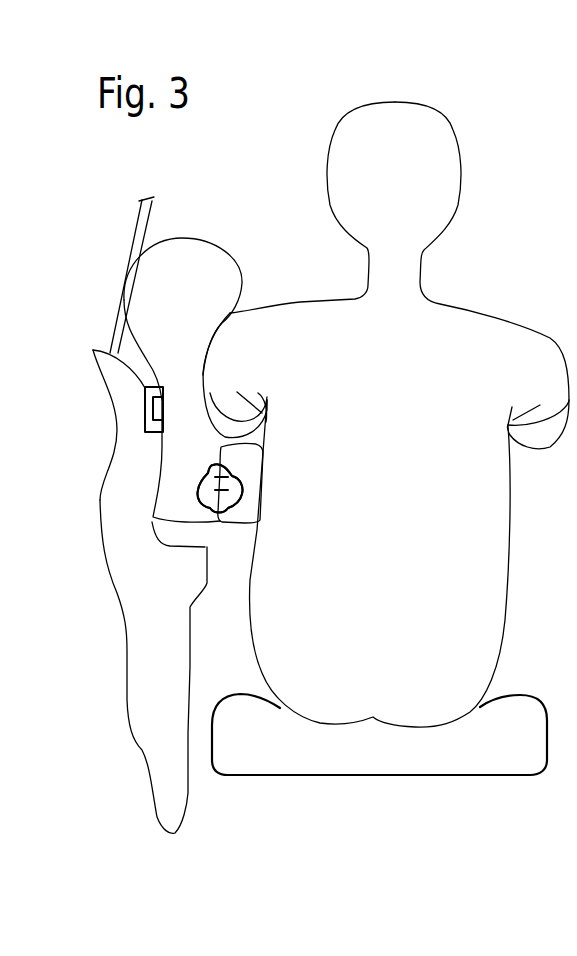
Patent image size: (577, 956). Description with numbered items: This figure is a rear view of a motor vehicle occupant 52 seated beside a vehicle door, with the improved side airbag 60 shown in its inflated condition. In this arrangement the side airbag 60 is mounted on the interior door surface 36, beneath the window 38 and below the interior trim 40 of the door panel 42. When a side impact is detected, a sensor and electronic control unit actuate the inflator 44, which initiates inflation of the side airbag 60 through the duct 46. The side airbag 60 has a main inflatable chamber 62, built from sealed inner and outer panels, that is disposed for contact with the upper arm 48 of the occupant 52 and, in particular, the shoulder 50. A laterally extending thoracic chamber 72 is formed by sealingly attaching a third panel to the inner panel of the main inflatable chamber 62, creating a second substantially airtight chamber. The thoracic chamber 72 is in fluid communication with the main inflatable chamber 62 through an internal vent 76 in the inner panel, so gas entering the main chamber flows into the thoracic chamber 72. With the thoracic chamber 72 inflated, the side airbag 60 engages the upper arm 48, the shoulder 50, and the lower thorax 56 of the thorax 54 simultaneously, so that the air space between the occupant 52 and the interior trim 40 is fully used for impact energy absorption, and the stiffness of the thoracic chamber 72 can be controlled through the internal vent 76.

The interior door surface 36 is at (190, 695).
The window 38 is at (138, 233).
The interior trim 40 is at (128, 360).
The door panel 42 is at (150, 527).
The inflator 44 is at (143, 427).
The duct 46 is at (145, 408).
The upper arm 48 is at (228, 420).
The shoulder 50 is at (240, 347).
The motor vehicle occupant 52 is at (433, 660).
The thorax 54 is at (267, 425).
The lower thorax 56 is at (260, 480).
The side airbag 60 is at (185, 350).
The main inflatable chamber 62 is at (192, 260).
The laterally extending thoracic chamber 72 is at (253, 461).
The internal vent 76 is at (222, 488).